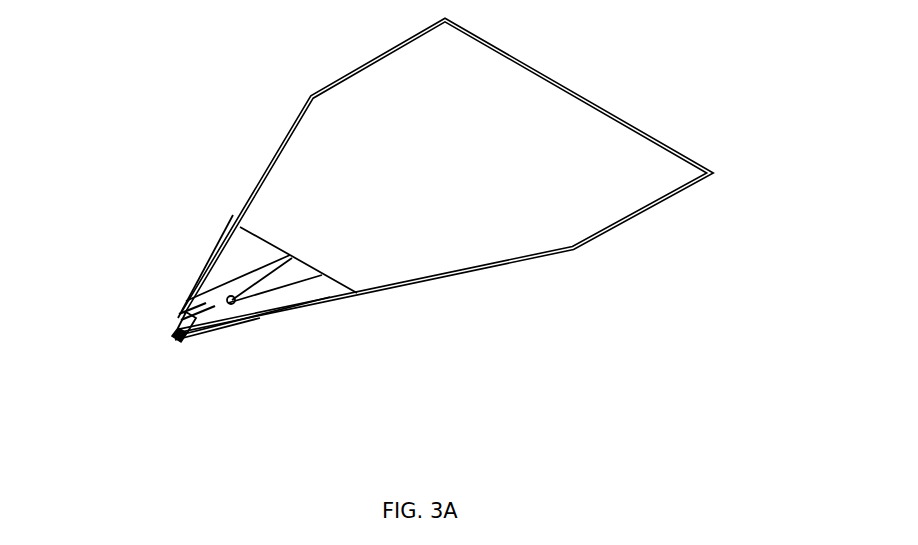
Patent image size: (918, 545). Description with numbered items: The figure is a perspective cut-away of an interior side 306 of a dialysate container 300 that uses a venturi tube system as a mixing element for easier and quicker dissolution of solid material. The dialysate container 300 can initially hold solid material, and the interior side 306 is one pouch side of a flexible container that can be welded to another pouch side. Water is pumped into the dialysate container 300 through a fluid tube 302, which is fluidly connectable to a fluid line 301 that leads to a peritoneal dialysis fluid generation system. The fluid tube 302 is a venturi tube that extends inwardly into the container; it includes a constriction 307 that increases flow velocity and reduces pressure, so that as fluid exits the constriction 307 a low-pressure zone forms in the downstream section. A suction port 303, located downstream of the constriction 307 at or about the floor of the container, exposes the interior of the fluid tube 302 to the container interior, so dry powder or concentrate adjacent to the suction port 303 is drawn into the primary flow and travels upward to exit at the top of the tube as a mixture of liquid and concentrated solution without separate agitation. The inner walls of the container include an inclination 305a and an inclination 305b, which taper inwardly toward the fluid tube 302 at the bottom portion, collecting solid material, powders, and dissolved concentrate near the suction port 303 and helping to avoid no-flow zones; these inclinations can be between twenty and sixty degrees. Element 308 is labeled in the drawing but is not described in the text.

The dialysate container 300 is at (578, 355).
The fluid line 301 is at (174, 341).
The fluid tube 302 is at (252, 287).
The suction port 303 is at (228, 325).
The inclination 305a is at (193, 282).
The inclination 305b is at (260, 322).
The interior side 306 is at (625, 200).
The constriction 307 is at (177, 312).
The bracket 308 is at (243, 250).